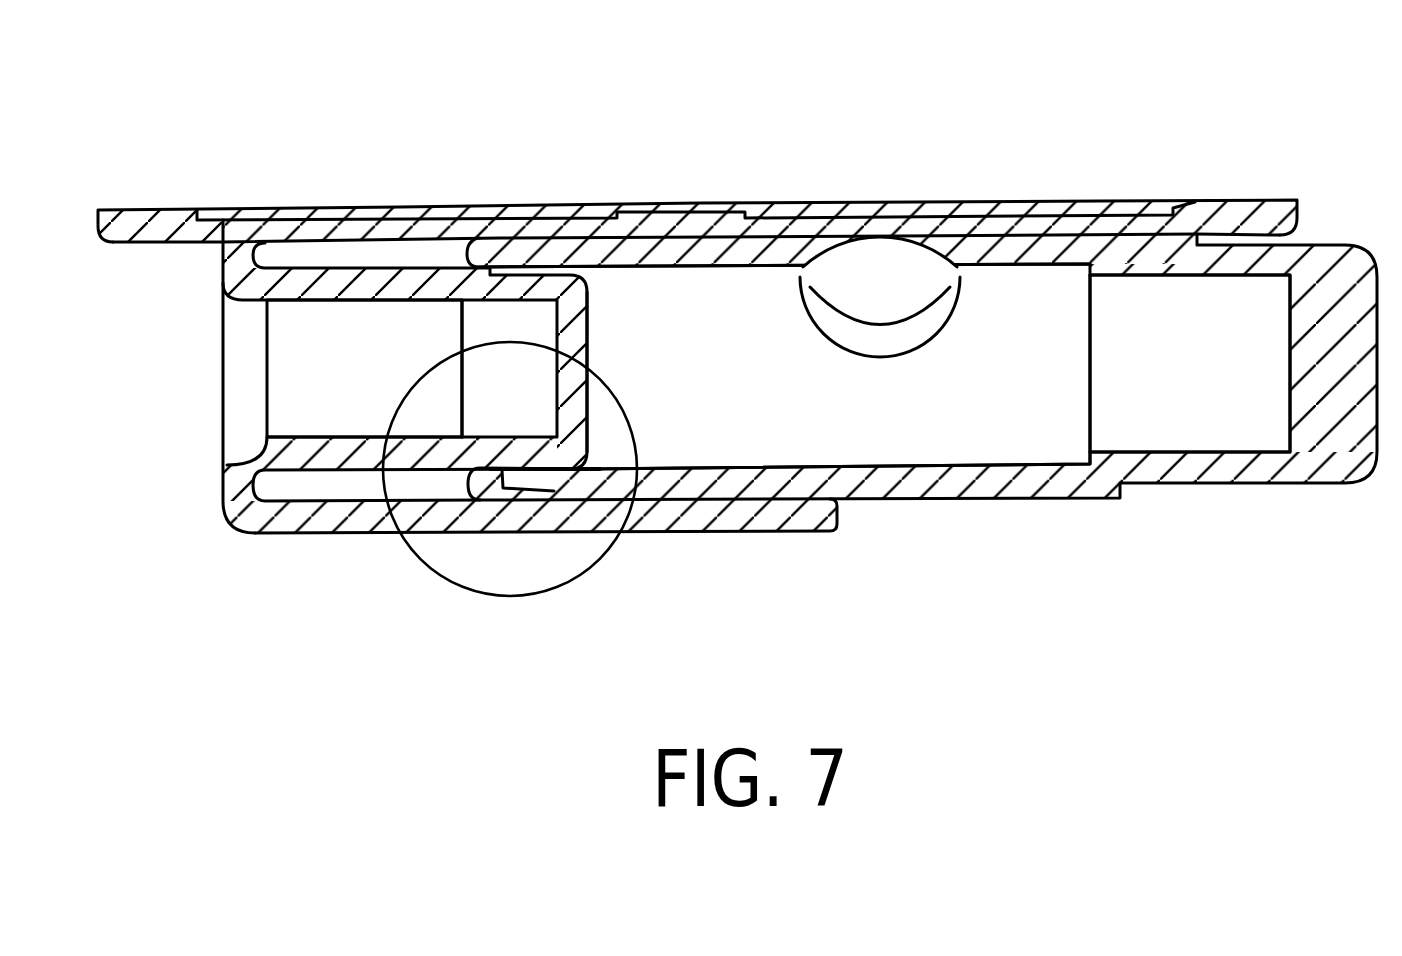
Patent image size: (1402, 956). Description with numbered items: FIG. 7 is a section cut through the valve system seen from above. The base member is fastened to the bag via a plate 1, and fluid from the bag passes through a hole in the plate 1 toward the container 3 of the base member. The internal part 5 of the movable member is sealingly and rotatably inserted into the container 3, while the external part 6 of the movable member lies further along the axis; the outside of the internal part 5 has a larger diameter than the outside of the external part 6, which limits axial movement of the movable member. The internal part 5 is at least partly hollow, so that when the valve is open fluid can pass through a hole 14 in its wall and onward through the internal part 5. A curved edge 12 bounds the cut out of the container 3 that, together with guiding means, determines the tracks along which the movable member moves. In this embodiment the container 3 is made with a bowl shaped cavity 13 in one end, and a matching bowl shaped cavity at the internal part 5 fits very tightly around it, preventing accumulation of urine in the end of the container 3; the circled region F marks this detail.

The plate 1 is at (173, 233).
The container 3 is at (240, 497).
The internal part 5 is at (784, 366).
The external part 6 is at (1190, 363).
The curved edge 12 is at (838, 503).
The bowl shaped cavity 13 is at (364, 368).
The hole 14 is at (878, 347).
The detail region F is at (546, 597).